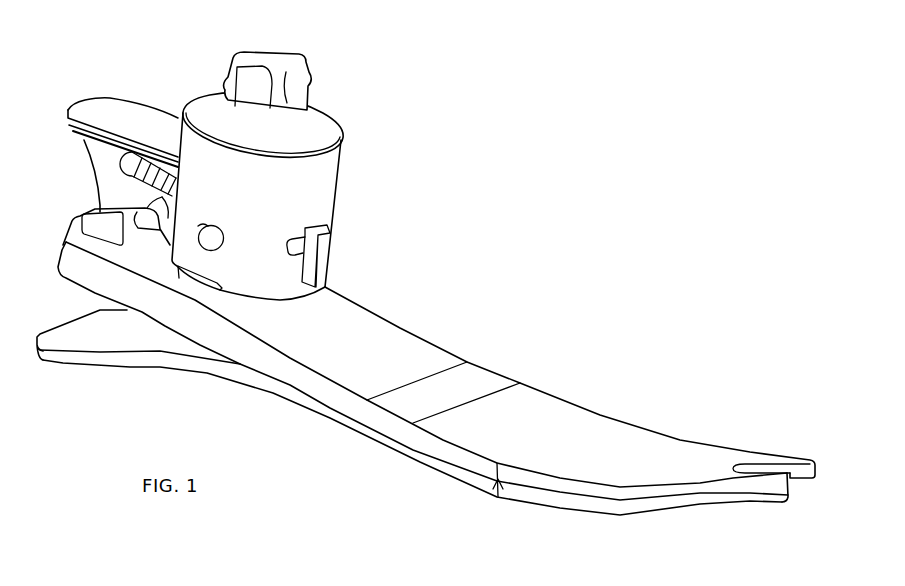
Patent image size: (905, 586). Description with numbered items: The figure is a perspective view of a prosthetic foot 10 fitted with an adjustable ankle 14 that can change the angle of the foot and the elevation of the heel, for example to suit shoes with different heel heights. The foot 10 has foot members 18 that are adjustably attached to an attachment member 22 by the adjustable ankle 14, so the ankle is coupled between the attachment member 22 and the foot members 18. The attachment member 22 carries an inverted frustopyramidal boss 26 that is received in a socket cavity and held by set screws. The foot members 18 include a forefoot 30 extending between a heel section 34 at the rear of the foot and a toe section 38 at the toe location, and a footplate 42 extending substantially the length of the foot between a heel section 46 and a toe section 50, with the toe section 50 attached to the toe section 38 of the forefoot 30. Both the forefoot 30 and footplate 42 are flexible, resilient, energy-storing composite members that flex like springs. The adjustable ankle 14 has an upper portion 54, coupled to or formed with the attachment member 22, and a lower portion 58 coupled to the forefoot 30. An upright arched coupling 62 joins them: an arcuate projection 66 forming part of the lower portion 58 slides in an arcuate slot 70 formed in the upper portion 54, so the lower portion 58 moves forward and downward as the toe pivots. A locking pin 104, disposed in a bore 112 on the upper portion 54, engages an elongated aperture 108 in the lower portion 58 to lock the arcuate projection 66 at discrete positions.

The prosthetic foot 10 is at (443, 318).
The adjustable ankle 14 is at (340, 203).
The foot members 18 is at (557, 393).
The attachment member 22 is at (327, 112).
The inverted frustopyramidal boss 26 is at (305, 60).
The forefoot 30 is at (365, 303).
The heel section 34 is at (58, 258).
The toe section 38 is at (750, 452).
The footplate 42 is at (405, 465).
The heel section 46 is at (80, 365).
The toe section 50 is at (738, 505).
The upper portion 54 is at (340, 170).
The lower portion 58 is at (87, 138).
The arched coupling 62 is at (177, 101).
The arcuate projection 66 is at (127, 100).
The arcuate slot 70 is at (329, 227).
The locking pin 104 is at (213, 251).
The elongated aperture 108 is at (128, 172).
The bore 112 is at (202, 228).